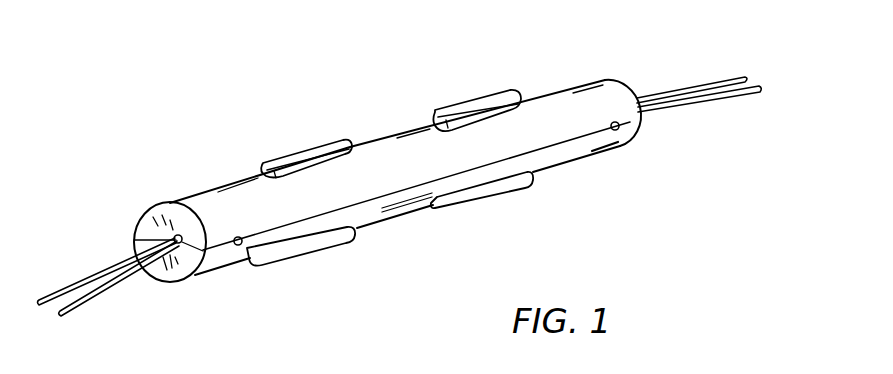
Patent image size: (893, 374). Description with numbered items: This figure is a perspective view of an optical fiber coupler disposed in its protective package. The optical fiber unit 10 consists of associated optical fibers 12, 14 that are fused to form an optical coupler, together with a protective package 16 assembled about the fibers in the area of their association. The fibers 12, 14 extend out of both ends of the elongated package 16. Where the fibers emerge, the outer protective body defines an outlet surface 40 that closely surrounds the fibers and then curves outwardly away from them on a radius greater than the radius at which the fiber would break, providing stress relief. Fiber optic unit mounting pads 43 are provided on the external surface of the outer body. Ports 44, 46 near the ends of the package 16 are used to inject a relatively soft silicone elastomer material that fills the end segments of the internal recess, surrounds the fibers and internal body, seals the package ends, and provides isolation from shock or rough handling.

The optical fiber unit 10 is at (386, 100).
The optical fiber 12 is at (93, 273).
The optical fiber 14 is at (97, 298).
The protective package 16 is at (593, 156).
The outlet surface 40 is at (185, 265).
The fiber optic unit mounting pads 43 is at (280, 145).
The port 44 is at (240, 247).
The port 46 is at (619, 130).